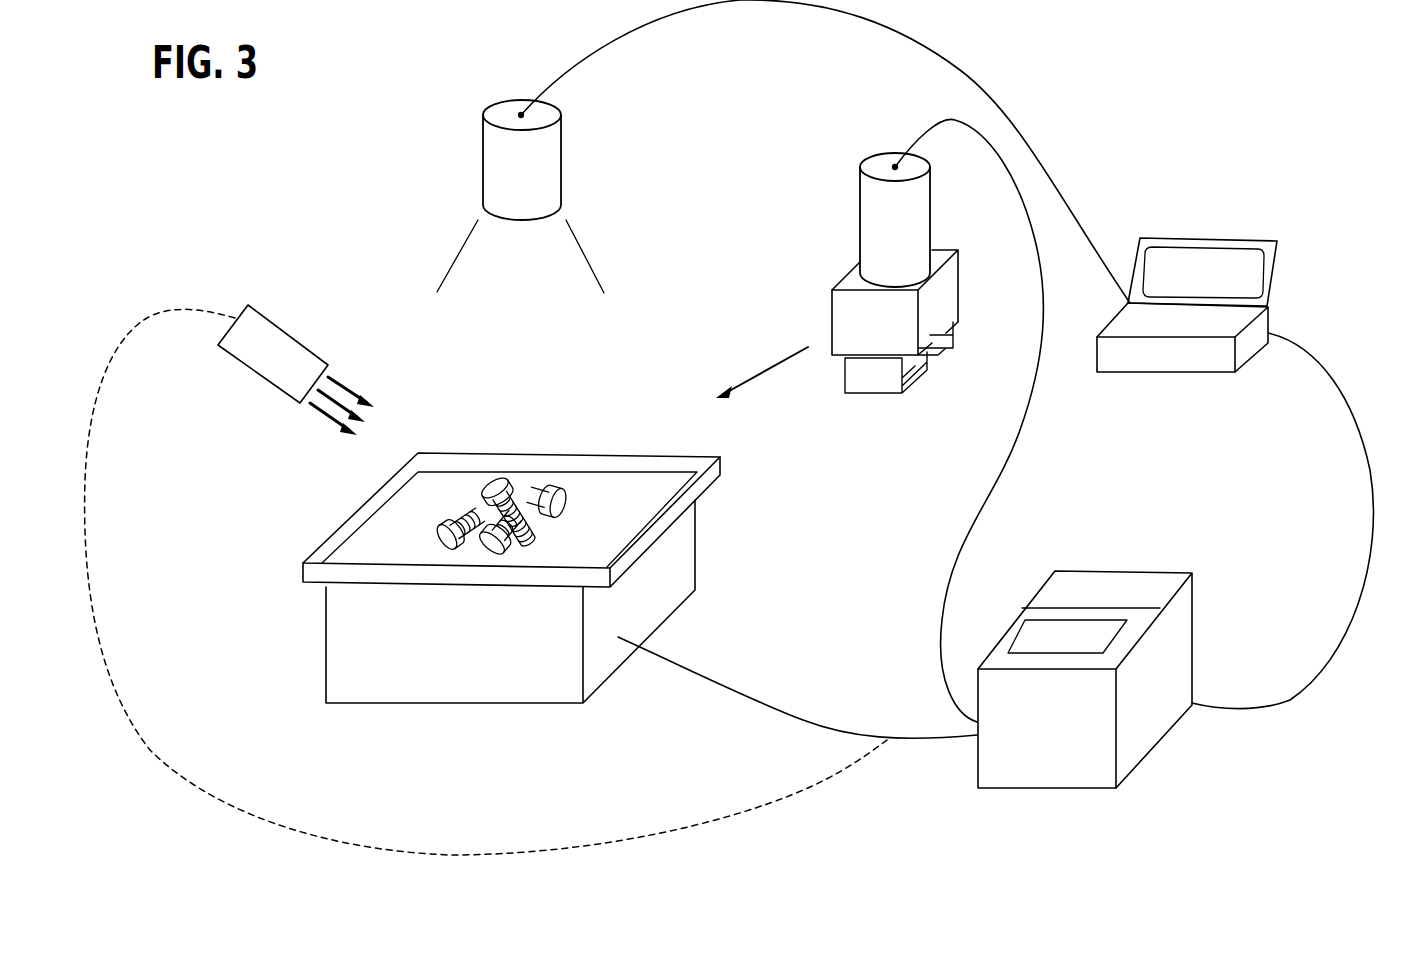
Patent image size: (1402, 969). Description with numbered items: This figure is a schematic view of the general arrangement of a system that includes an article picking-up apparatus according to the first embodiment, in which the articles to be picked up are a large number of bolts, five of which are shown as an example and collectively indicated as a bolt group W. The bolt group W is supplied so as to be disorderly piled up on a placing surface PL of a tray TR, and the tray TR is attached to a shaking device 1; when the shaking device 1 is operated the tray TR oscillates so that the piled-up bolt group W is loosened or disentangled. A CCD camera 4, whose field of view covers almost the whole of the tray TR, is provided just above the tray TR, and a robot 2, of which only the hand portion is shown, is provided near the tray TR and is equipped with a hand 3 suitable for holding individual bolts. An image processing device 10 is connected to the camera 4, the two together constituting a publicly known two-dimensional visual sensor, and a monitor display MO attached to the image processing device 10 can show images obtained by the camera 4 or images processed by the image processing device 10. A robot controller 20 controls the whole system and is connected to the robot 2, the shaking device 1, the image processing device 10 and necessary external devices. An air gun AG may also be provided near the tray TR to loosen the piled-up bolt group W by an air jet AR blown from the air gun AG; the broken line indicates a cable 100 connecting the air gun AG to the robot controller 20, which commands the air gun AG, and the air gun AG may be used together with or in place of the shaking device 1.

The shaking device 1 is at (446, 688).
The robot 2 is at (868, 234).
The hand 3 is at (948, 352).
The CCD camera 4 is at (492, 182).
The image processing device 10 is at (1218, 340).
The monitor display MO is at (1250, 274).
The robot controller 20 is at (1050, 775).
The tray TR is at (449, 520).
The placing surface PL is at (396, 559).
The bolt group W is at (430, 489).
The air gun AG is at (275, 338).
The air jet AR is at (350, 387).
The cable 100 is at (488, 850).